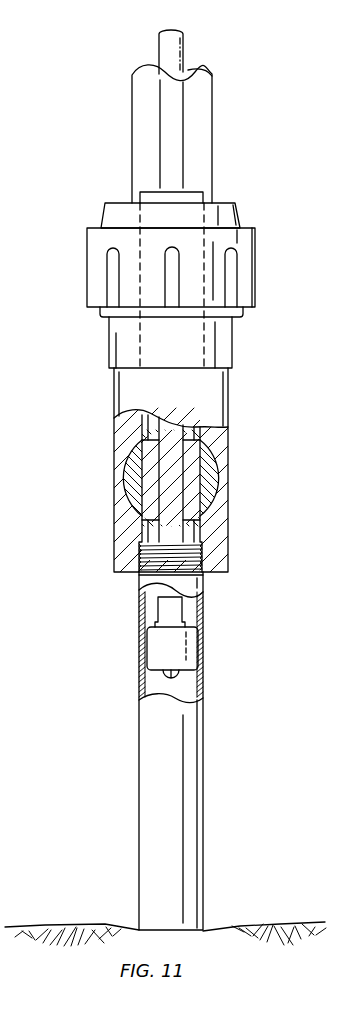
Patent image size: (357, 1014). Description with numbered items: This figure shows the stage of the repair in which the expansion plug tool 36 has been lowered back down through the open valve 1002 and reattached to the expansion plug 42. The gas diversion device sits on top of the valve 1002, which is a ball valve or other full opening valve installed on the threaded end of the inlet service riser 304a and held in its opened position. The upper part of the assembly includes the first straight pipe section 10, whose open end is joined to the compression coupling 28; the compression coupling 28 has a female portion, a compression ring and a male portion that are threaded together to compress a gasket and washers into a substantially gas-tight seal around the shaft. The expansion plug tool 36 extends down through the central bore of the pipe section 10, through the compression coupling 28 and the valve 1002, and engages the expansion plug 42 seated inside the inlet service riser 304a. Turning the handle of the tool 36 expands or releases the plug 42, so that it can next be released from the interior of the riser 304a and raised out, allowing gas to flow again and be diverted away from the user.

The expansion plug tool 36 is at (158, 50).
The first straight pipe section 10 is at (213, 146).
The compression coupling 28 is at (256, 270).
The valve 1002 is at (114, 465).
The expansion plug 42 is at (152, 642).
The inlet service riser 304a is at (139, 797).